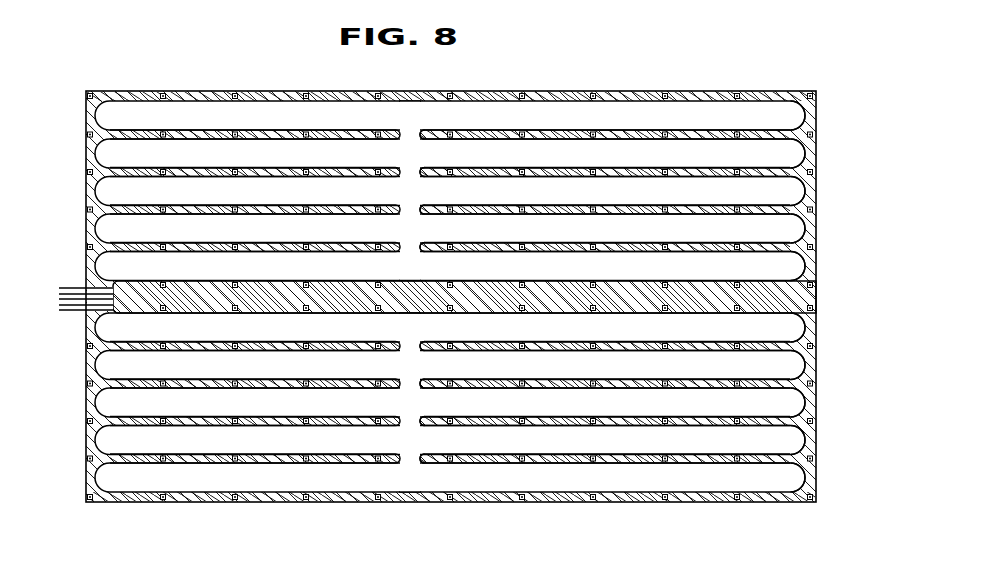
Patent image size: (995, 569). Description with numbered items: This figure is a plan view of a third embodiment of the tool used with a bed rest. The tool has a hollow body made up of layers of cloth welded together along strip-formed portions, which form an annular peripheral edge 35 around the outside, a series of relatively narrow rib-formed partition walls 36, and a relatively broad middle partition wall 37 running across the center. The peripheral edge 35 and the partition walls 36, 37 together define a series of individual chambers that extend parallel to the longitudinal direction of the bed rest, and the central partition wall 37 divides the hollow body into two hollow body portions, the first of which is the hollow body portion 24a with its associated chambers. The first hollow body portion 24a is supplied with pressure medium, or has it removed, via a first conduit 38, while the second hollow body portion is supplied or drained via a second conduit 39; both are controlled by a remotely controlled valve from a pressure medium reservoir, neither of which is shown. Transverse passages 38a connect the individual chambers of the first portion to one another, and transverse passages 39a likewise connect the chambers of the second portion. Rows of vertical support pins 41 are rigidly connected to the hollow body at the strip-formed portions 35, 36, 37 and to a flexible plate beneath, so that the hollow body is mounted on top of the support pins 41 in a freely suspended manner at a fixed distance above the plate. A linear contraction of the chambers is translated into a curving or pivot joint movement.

The first hollow body portion 24a is at (177, 187).
The annular peripheral edge 35 is at (705, 93).
The rib-formed partition walls 36 is at (703, 167).
The middle partition wall 37 is at (793, 297).
The first conduit 38 is at (72, 291).
The second conduit 39 is at (72, 308).
The transverse passages 38a is at (421, 135).
The transverse passages 39a is at (422, 388).
The vertical support pins 41 is at (450, 463).